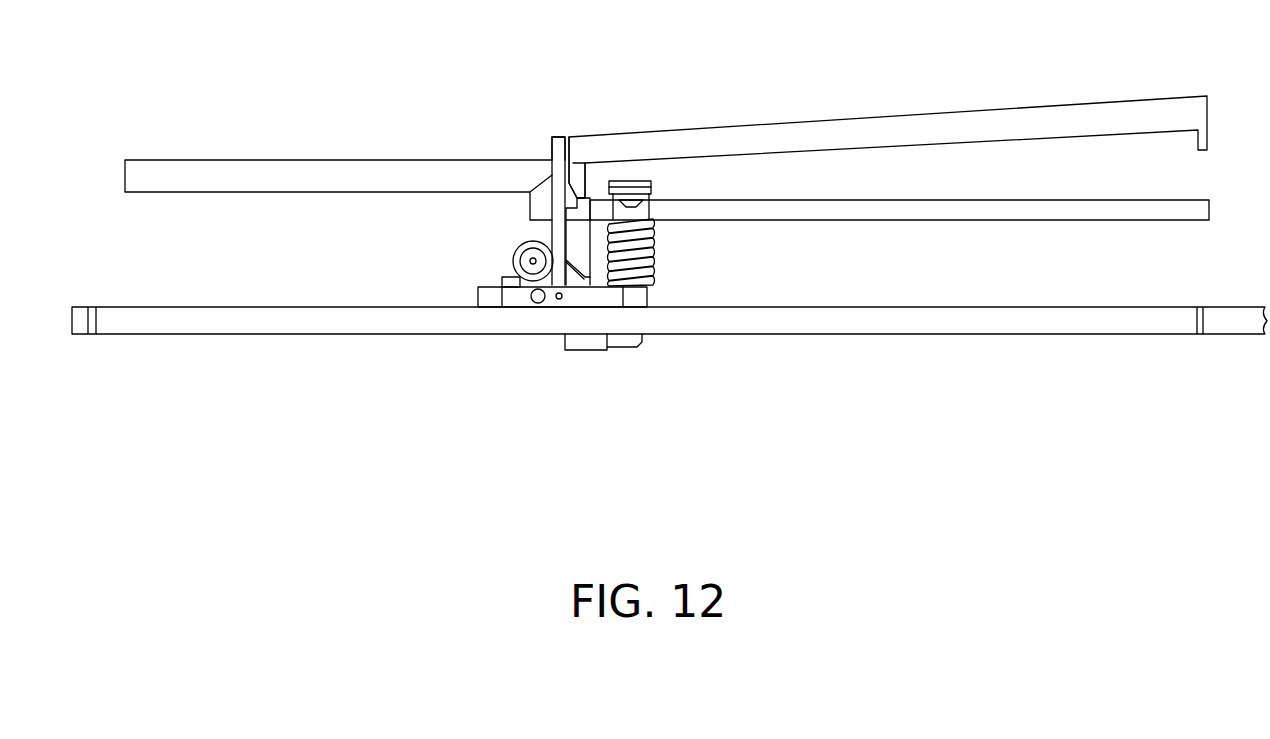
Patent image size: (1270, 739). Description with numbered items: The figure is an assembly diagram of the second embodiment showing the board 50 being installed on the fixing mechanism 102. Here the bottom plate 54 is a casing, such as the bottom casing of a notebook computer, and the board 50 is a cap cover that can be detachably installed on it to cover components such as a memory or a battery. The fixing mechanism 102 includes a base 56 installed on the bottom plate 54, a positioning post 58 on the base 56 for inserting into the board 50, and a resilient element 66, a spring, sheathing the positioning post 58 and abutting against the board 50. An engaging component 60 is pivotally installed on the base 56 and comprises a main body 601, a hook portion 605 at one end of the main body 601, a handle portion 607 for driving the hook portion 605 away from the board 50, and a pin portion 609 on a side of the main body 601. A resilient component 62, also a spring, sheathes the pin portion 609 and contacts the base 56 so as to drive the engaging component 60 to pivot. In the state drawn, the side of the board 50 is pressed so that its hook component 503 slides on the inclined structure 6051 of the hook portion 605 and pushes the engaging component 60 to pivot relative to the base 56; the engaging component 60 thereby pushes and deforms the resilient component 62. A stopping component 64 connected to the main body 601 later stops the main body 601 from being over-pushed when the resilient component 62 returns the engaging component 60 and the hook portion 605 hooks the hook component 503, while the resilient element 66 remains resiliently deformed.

The board 50 is at (843, 128).
The hook component 503 is at (585, 193).
The inclined structure 6051 is at (573, 180).
The resilient component 62 is at (513, 260).
The handle portion 607 is at (558, 163).
The hook portion 605 is at (562, 198).
The pin portion 609 is at (540, 279).
The main body 601 is at (562, 268).
The stopping component 64 is at (580, 282).
The base 56 is at (605, 300).
The resilient element 66 is at (649, 286).
The positioning post 58 is at (633, 251).
The bottom plate 54 is at (905, 322).
The fixing mechanism 102 is at (618, 438).
The engaging component 60 is at (541, 452).